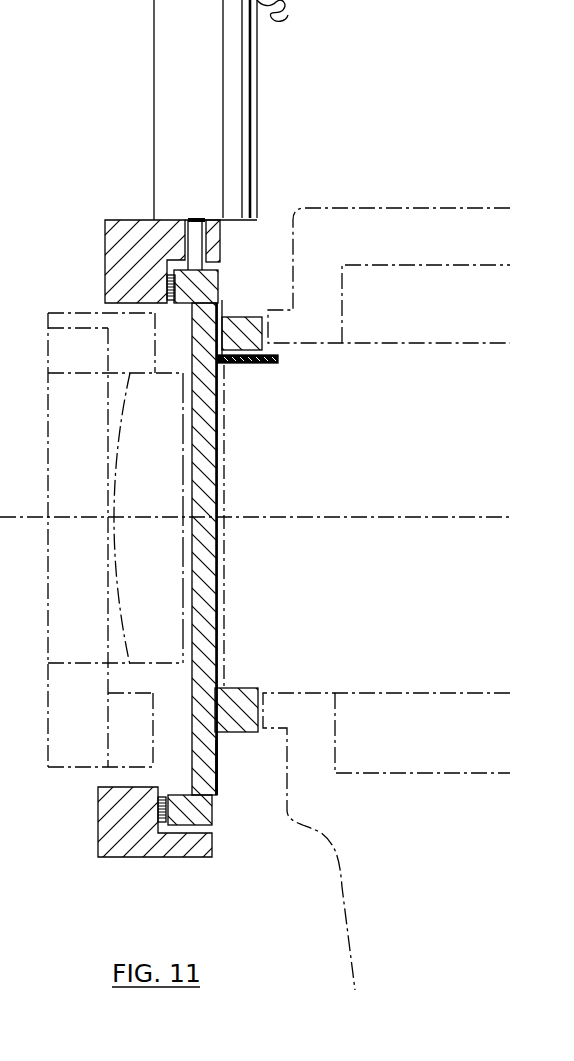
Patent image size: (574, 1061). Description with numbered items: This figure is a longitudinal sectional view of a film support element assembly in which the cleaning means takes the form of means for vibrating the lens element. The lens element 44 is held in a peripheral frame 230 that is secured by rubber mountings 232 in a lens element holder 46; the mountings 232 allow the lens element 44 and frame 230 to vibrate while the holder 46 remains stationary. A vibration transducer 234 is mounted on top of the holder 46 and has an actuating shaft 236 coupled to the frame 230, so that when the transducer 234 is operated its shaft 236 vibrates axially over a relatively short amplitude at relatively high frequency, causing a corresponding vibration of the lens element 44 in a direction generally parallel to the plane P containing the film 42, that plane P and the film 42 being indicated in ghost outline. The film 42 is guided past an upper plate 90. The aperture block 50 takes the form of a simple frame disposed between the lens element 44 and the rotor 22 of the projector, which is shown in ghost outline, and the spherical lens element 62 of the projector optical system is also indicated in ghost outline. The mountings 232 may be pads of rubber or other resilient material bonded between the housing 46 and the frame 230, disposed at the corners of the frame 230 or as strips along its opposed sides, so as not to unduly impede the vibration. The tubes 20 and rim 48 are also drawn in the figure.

The vibration transducer 234 is at (167, 79).
The tube assembly 20 is at (268, 117).
The lens element holder 46 is at (99, 244).
The actuating shaft 236 is at (203, 243).
The rubber mountings 232 is at (168, 305).
The plane containing the film P is at (228, 291).
The lens element 44 is at (208, 509).
The film 42 is at (232, 461).
The upper plate 90 is at (255, 363).
The rotor of the projector 22 is at (420, 334).
The spherical lens element 62 is at (106, 548).
The aperture block 50 is at (238, 706).
The rim 48 is at (214, 772).
The peripheral frame 230 is at (213, 809).